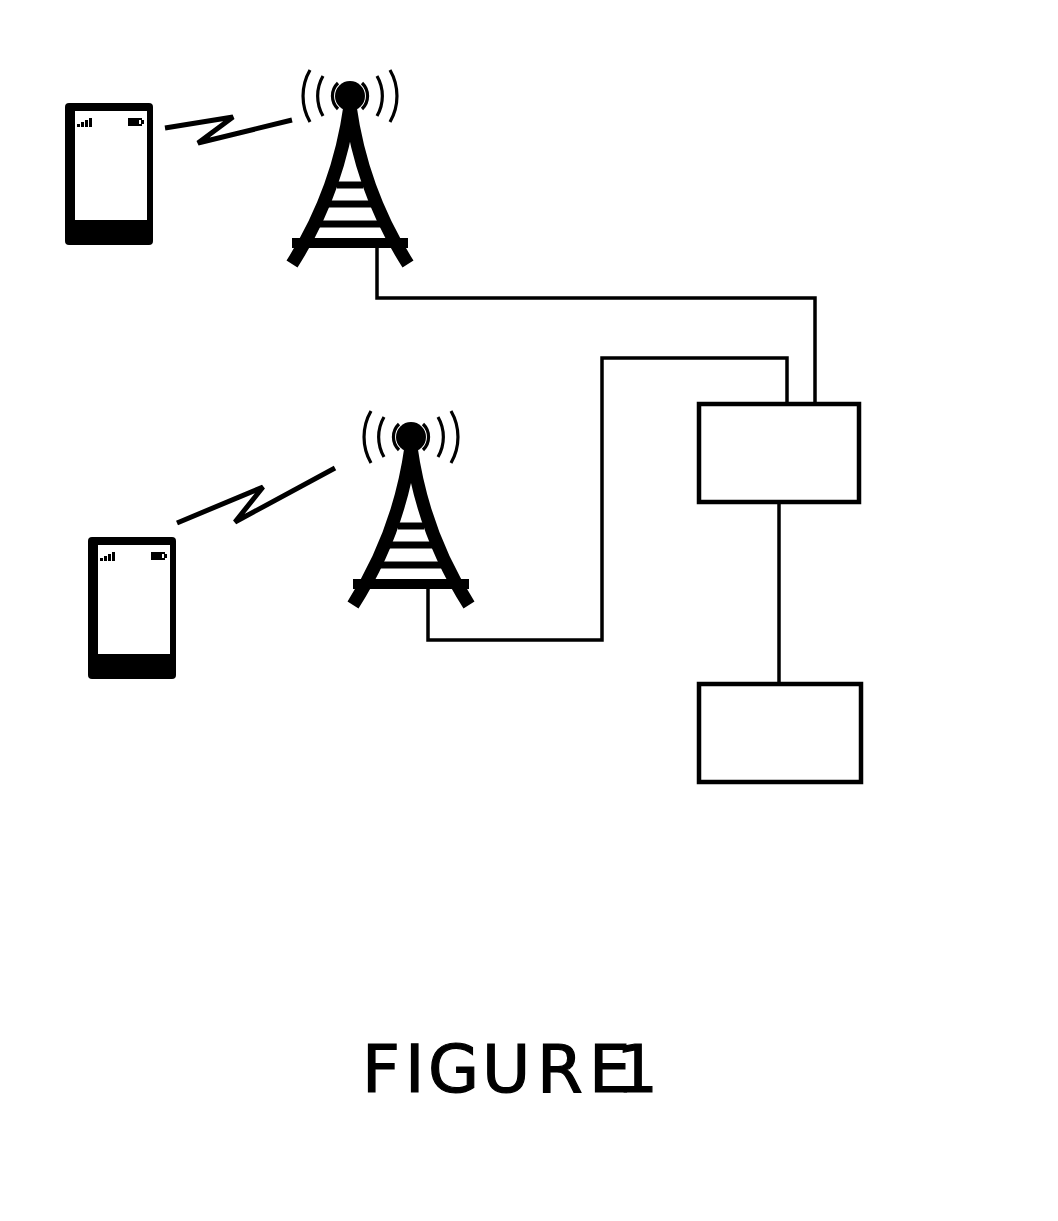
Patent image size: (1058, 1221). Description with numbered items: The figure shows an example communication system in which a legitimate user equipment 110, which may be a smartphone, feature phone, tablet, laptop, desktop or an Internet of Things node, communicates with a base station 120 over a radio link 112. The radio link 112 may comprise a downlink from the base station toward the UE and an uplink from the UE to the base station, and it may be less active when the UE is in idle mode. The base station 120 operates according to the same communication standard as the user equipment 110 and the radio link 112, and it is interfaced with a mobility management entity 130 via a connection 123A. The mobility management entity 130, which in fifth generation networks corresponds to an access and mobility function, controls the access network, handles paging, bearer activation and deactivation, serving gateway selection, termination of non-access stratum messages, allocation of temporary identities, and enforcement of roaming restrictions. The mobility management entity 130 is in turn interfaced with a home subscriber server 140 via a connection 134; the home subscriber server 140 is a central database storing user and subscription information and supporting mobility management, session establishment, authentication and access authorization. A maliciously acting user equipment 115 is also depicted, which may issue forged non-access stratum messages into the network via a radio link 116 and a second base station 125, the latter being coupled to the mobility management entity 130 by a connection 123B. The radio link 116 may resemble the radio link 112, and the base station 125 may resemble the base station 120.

The user equipment 110 is at (113, 245).
The radio link 112 is at (228, 117).
The malicious UE 115 is at (138, 677).
The radio link 116 is at (262, 487).
The base station 120 is at (388, 210).
The connection 123A is at (597, 297).
The connection 123B is at (690, 358).
The base station 125 is at (455, 560).
The mobility management entity 130 is at (805, 474).
The connection 134 is at (779, 633).
The home subscriber server 140 is at (805, 752).